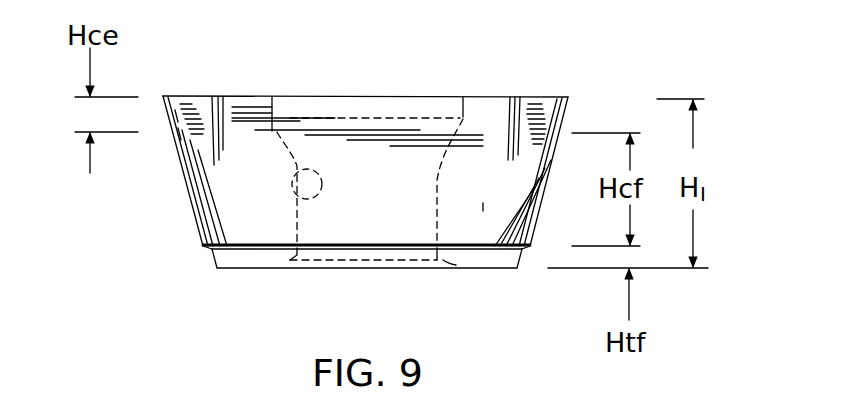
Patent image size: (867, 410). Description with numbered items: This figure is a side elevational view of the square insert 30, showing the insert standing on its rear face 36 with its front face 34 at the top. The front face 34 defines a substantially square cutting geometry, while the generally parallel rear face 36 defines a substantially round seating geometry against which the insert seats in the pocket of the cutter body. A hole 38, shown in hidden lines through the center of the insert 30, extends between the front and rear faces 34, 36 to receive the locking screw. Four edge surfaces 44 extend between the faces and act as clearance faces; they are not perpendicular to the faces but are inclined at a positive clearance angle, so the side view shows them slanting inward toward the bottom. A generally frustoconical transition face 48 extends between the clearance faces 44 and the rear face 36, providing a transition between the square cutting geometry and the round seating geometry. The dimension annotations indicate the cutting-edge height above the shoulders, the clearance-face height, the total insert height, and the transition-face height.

The square insert 30 is at (592, 72).
The front face 34 is at (490, 97).
The rear face 36 is at (276, 269).
The hole 38 is at (292, 195).
The edge surfaces 44 is at (236, 137).
The transition face 48 is at (211, 251).